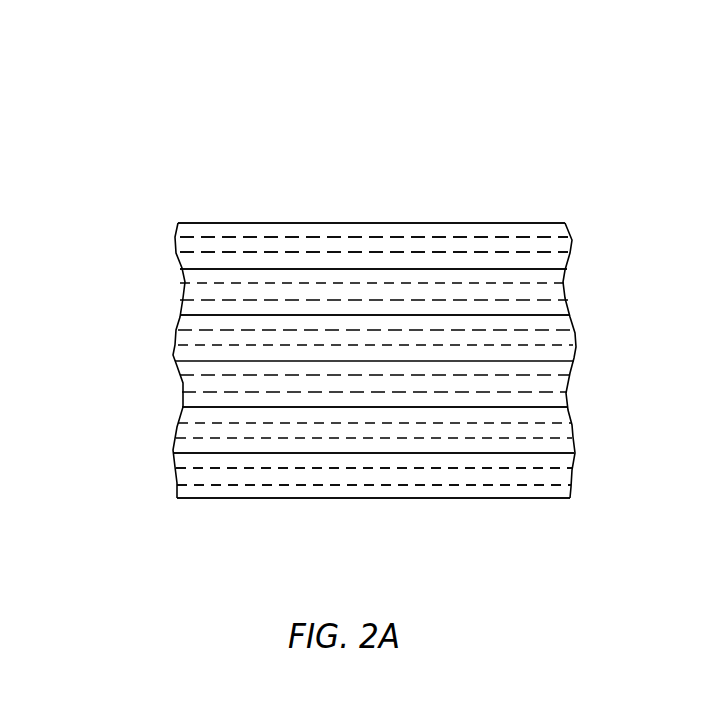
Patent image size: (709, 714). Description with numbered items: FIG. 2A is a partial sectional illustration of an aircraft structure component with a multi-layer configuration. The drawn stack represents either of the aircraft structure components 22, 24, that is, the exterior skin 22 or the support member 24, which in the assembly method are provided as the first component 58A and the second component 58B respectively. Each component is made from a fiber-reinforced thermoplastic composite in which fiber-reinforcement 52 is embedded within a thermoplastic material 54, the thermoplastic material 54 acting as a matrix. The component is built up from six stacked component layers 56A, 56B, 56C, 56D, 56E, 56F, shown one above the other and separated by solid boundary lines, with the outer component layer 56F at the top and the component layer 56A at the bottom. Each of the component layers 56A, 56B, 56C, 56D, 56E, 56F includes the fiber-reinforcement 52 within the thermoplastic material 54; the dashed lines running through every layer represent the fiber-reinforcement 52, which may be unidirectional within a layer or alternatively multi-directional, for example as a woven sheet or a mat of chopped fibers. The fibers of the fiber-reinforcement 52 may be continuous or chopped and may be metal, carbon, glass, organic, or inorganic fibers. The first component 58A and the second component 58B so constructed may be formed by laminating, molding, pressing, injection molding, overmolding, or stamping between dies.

The exterior skin 22 is at (584, 133).
The support member 24 is at (346, 319).
The first component 58A is at (203, 136).
The second component 58B is at (346, 359).
The component layer 56A is at (157, 478).
The component layer 56B is at (157, 432).
The component layer 56C is at (157, 386).
The component layer 56D is at (157, 338).
The component layer 56E is at (157, 288).
The outer component layer 56F is at (157, 238).
The thermoplastic material 54 is at (441, 228).
The fiber-reinforcement 52 is at (537, 250).